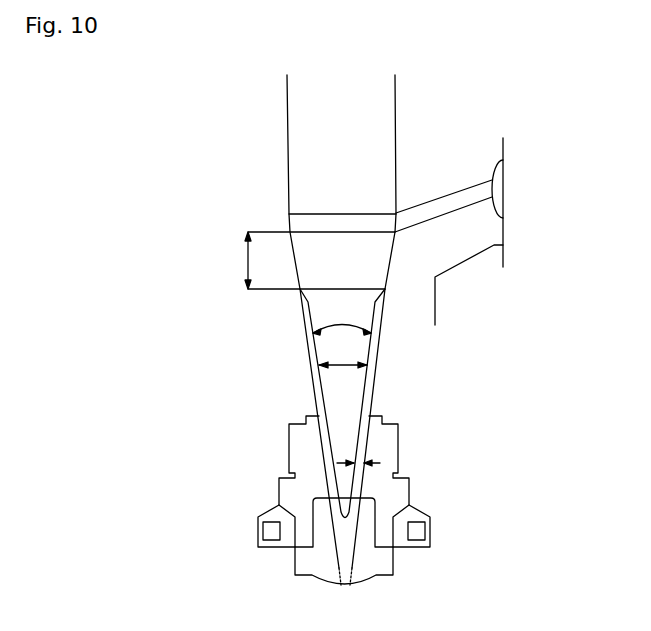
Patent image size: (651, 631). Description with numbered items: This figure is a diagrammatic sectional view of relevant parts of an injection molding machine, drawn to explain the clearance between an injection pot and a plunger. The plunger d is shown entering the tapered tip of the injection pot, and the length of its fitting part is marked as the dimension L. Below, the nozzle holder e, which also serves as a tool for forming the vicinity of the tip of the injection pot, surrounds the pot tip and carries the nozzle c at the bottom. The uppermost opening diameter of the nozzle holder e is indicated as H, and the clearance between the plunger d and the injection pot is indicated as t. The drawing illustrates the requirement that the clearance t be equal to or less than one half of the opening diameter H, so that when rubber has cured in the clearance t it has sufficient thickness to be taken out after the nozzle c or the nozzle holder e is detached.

The plunger d is at (298, 158).
The nozzle holder e is at (300, 452).
The nozzle c is at (363, 568).
The length of fitting part of plunger L is at (305, 260).
The uppermost opening diameter of nozzle holder H is at (343, 352).
The clearance between plunger and injection pot t is at (358, 449).